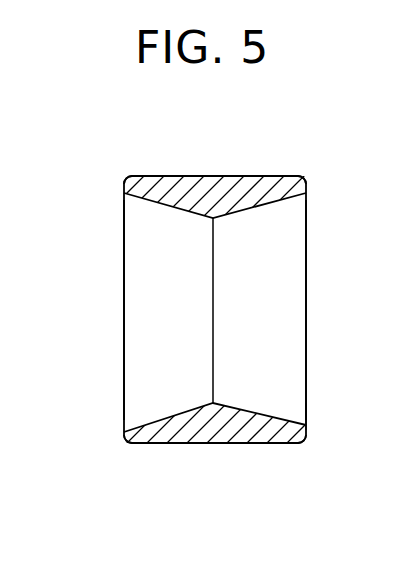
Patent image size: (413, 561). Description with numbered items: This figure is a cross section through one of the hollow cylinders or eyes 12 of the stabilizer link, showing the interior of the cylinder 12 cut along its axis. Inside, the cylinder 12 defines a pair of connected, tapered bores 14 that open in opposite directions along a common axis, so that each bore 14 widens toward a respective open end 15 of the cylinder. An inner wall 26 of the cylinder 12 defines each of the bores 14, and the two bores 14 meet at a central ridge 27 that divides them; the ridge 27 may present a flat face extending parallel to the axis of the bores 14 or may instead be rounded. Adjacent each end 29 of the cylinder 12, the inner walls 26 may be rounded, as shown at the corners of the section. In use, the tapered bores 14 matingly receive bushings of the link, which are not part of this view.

The hollow cylinder 12 is at (212, 174).
The tapered bore 14 is at (258, 207).
The open end 15 is at (122, 215).
The inner wall 26 is at (293, 418).
The central ridge 27 is at (213, 312).
The end of the cylinder 29 is at (124, 196).